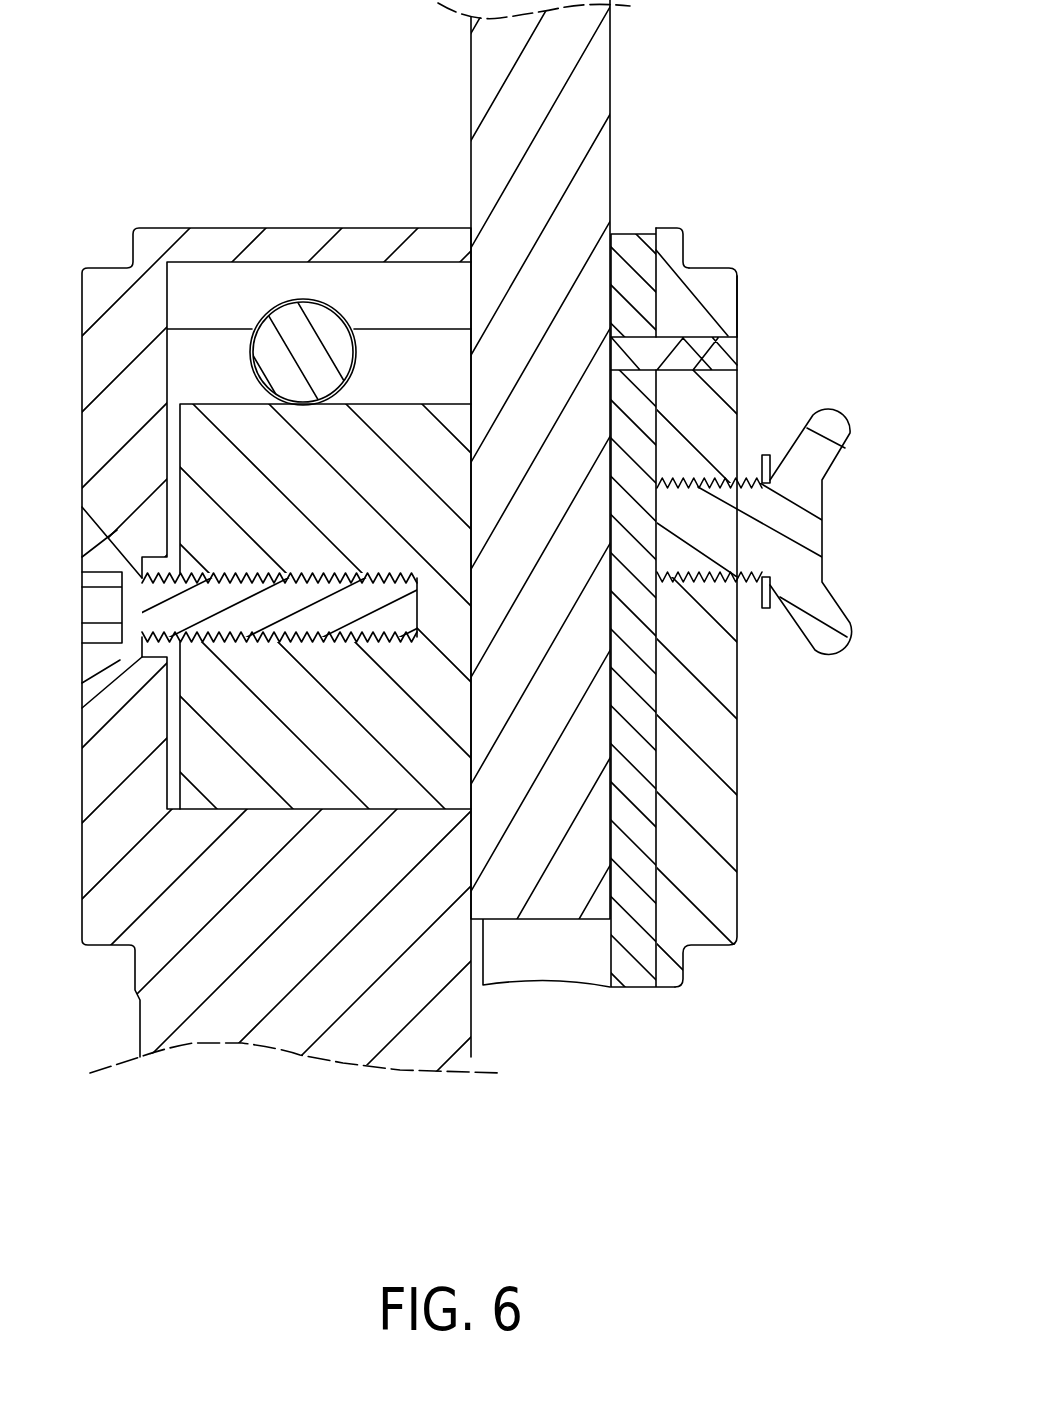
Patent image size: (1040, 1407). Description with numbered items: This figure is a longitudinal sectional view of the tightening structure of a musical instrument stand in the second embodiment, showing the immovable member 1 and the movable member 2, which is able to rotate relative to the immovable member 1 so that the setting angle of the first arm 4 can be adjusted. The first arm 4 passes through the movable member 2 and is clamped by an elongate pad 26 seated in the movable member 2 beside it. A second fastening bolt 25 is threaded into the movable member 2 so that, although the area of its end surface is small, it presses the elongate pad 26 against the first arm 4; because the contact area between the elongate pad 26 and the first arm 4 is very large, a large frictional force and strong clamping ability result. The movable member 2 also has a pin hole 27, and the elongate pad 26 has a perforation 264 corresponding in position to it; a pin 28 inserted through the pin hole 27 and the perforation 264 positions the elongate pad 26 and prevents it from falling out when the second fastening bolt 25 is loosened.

The immovable member 1 is at (292, 232).
The movable member 2 is at (715, 745).
The first arm 4 is at (595, 62).
The second fastening bolt 25 is at (810, 528).
The elongate pad 26 is at (626, 248).
The perforation 264 is at (660, 358).
The pin hole 27 is at (729, 337).
The pin 28 is at (730, 354).